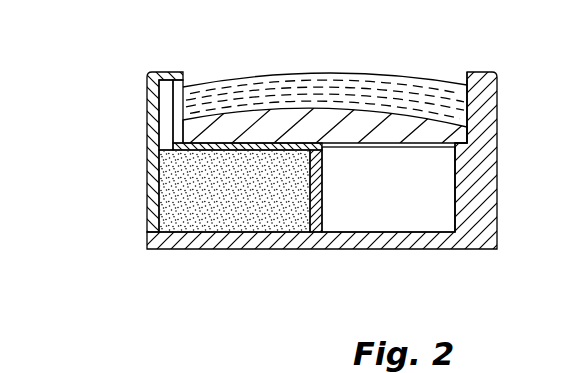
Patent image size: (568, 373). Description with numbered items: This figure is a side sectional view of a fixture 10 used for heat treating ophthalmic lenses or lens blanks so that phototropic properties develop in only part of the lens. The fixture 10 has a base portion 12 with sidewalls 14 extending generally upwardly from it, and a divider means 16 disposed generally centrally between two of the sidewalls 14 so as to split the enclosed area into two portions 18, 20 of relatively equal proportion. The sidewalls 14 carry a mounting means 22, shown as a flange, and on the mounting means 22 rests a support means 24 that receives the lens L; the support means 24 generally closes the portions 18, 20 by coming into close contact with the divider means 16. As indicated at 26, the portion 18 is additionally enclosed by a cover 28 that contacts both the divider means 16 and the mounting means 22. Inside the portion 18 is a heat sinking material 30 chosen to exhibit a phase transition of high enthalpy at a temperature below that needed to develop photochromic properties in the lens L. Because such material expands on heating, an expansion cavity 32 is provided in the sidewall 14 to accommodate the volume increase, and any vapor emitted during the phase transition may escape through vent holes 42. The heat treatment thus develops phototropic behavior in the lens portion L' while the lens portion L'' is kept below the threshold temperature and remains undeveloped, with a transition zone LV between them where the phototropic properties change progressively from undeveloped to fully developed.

The fixture 10 is at (116, 181).
The base portion 12 is at (423, 243).
The sidewalls 14 is at (497, 175).
The divider means 16 is at (322, 208).
The portion 18 is at (250, 222).
The portion 20 is at (430, 197).
The mounting means 22 is at (468, 139).
The support means 24 is at (400, 122).
The enclosure of portion 18 26 is at (325, 141).
The cover 28 is at (283, 143).
The heat sinking material 30 is at (195, 198).
The expansion cavity 32 is at (155, 120).
The vent holes 42 is at (153, 92).
The lens L is at (258, 40).
The lens portion L' is at (369, 63).
The lens portion L'' is at (216, 64).
The transition zone LV is at (316, 72).